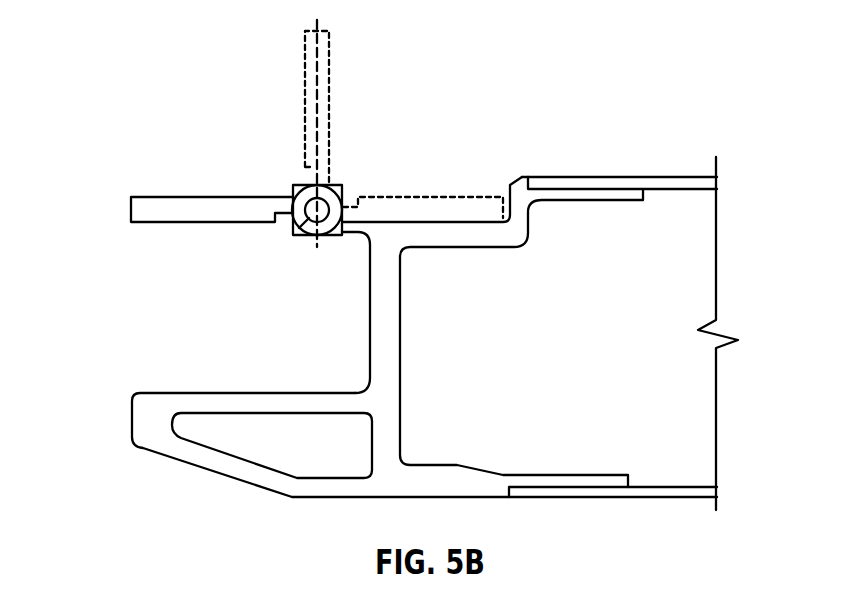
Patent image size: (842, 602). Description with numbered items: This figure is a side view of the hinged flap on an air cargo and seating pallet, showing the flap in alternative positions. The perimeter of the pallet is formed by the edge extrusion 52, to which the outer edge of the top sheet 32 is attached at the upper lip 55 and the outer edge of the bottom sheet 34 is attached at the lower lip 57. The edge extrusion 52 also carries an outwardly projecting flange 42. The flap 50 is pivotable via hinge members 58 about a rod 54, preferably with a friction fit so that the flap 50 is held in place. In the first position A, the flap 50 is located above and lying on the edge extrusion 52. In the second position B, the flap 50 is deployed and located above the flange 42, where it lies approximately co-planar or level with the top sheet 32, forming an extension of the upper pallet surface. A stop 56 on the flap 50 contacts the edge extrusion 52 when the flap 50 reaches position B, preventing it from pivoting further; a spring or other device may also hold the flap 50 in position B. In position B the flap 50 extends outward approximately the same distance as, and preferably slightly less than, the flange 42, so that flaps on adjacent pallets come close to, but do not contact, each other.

The top sheet 32 is at (673, 182).
The bottom sheet 34 is at (704, 488).
The flange 42 is at (148, 420).
The flap 50 is at (317, 83).
The edge extrusion 52 is at (387, 312).
The rod 54 is at (293, 233).
The upper lip 55 is at (585, 185).
The stop 56 is at (303, 237).
The lower lip 57 is at (574, 480).
The hinge members 58 is at (335, 232).
The first position A is at (430, 197).
The second position B is at (140, 210).